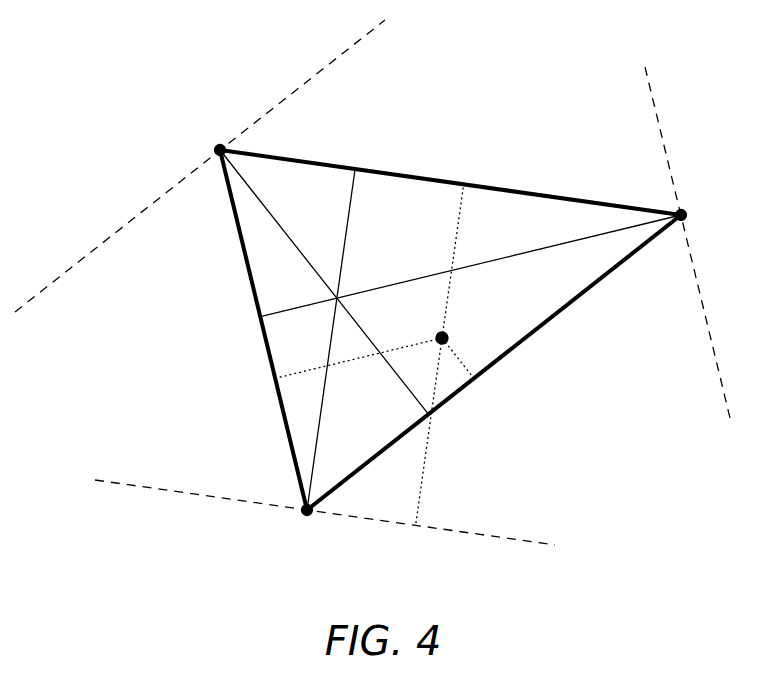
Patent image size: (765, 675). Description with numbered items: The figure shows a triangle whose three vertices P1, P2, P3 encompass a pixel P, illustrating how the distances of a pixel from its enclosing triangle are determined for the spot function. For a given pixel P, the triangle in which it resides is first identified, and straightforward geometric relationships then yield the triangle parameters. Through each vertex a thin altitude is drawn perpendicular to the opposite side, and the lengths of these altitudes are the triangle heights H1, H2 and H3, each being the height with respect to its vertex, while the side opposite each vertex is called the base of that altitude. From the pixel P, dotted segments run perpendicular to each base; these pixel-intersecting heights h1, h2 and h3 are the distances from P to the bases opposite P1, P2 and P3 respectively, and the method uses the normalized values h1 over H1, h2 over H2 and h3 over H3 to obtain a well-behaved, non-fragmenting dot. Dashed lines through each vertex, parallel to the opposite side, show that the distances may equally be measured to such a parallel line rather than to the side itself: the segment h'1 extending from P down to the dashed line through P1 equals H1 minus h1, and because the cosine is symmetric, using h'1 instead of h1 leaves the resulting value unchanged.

The triangle vertex P1 is at (305, 526).
The triangle vertex P2 is at (693, 220).
The triangle vertex P3 is at (208, 140).
The pixel P is at (451, 331).
The triangle height H1 is at (331, 339).
The triangle height H2 is at (470, 266).
The triangle height H3 is at (324, 282).
The pixel-intersecting height h1 is at (458, 261).
The pixel-intersecting height h2 is at (358, 351).
The pixel-intersecting height h3 is at (463, 358).
The alternative pixel distance h'1 is at (437, 431).